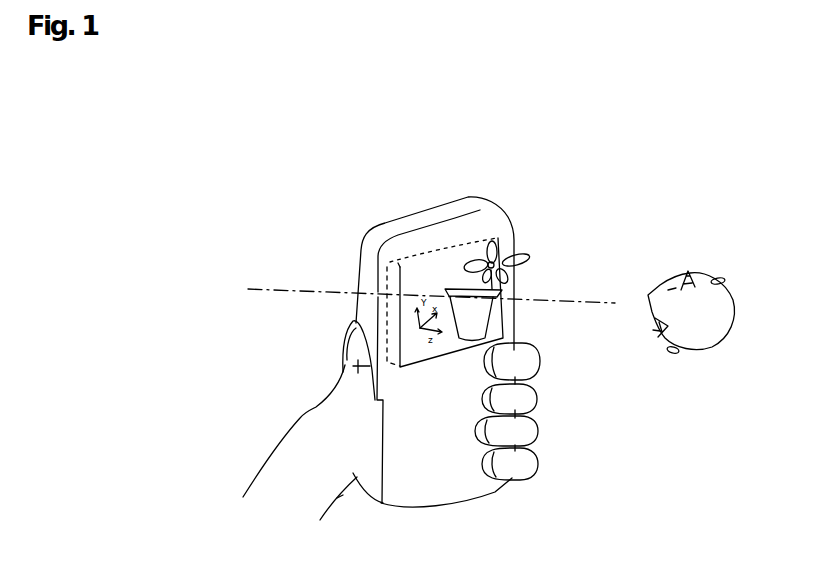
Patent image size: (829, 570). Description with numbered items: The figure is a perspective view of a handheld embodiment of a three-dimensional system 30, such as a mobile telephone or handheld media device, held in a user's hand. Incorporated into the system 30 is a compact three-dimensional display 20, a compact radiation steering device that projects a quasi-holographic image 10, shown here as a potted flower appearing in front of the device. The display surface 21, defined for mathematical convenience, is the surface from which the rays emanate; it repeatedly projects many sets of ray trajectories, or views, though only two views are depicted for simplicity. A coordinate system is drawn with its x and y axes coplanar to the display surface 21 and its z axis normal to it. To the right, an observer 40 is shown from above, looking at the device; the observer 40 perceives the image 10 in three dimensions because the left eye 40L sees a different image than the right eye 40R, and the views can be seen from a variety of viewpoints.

The 3D system 30 is at (415, 223).
The compact 3D display 20 is at (475, 236).
The display surface 21 is at (418, 280).
The 3D image 10 is at (520, 253).
The observer 40 is at (699, 379).
The right eye 40R is at (697, 281).
The left eye 40L is at (653, 338).